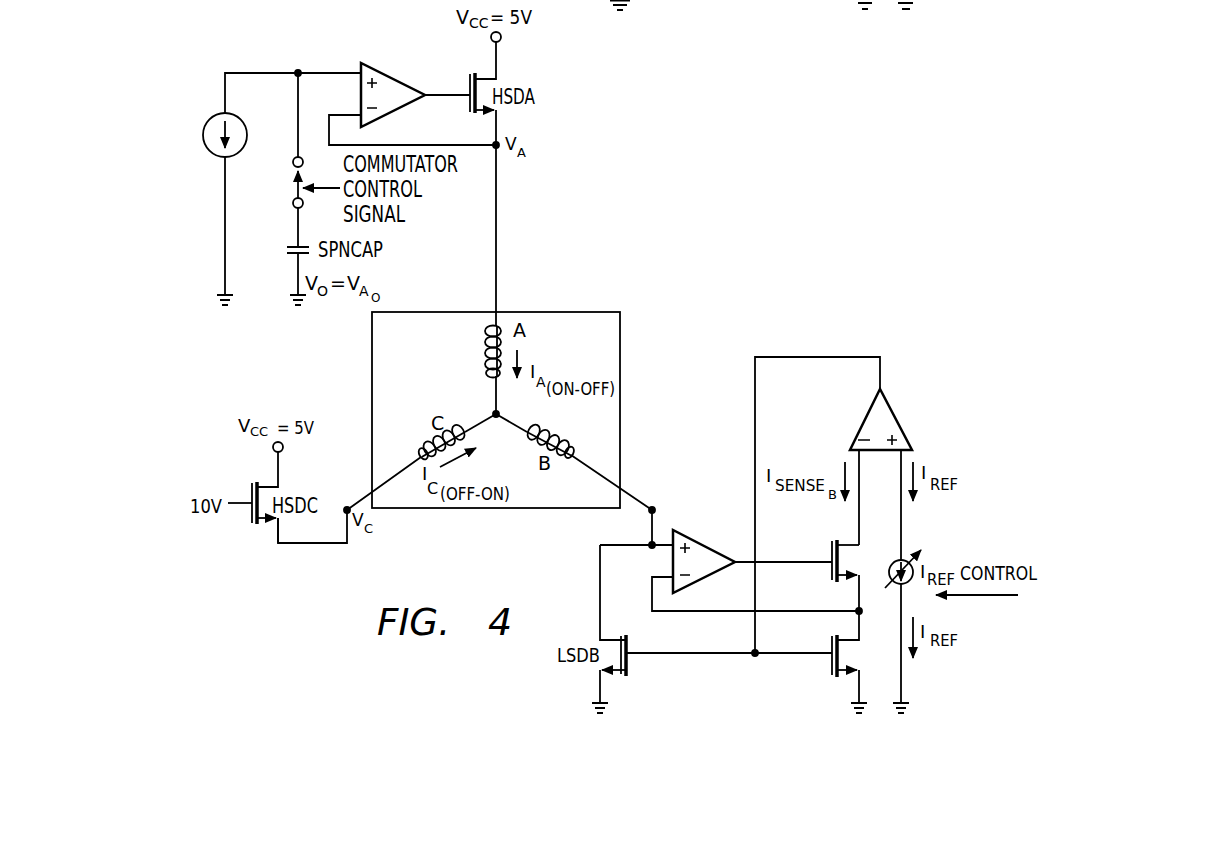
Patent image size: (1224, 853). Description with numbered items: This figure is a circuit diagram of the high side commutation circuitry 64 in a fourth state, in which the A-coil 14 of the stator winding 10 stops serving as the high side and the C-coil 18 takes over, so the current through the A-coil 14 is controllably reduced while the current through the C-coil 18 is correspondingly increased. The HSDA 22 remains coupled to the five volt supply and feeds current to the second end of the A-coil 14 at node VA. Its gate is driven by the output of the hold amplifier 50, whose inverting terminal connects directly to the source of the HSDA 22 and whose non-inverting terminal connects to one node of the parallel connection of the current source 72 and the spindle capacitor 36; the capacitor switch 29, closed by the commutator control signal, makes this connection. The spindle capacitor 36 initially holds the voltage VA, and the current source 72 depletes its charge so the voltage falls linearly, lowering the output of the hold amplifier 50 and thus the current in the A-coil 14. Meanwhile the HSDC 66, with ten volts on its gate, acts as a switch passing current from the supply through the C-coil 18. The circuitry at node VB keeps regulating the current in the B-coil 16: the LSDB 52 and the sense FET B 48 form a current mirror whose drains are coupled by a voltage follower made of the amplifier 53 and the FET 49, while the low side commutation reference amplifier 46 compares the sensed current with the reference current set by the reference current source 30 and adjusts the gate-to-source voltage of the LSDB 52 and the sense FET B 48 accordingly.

The stator winding 10 is at (620, 395).
The A-coil 14 is at (489, 345).
The B-coil 16 is at (566, 443).
The C-coil 18 is at (428, 447).
The HSDA 22 is at (468, 80).
The capacitor switch 29 is at (296, 191).
The reference current source 30 is at (893, 559).
The spindle capacitor 36 is at (288, 250).
The low side commutation reference amplifier 46 is at (895, 417).
The sense FET B 48 is at (830, 665).
The FET 49 is at (830, 552).
The hold amplifier 50 is at (396, 80).
The LSDB 52 is at (630, 662).
The amplifier 53 is at (703, 540).
The high side commutation circuitry 64 is at (810, 186).
The HSDC 66 is at (250, 515).
The current source 72 is at (211, 116).